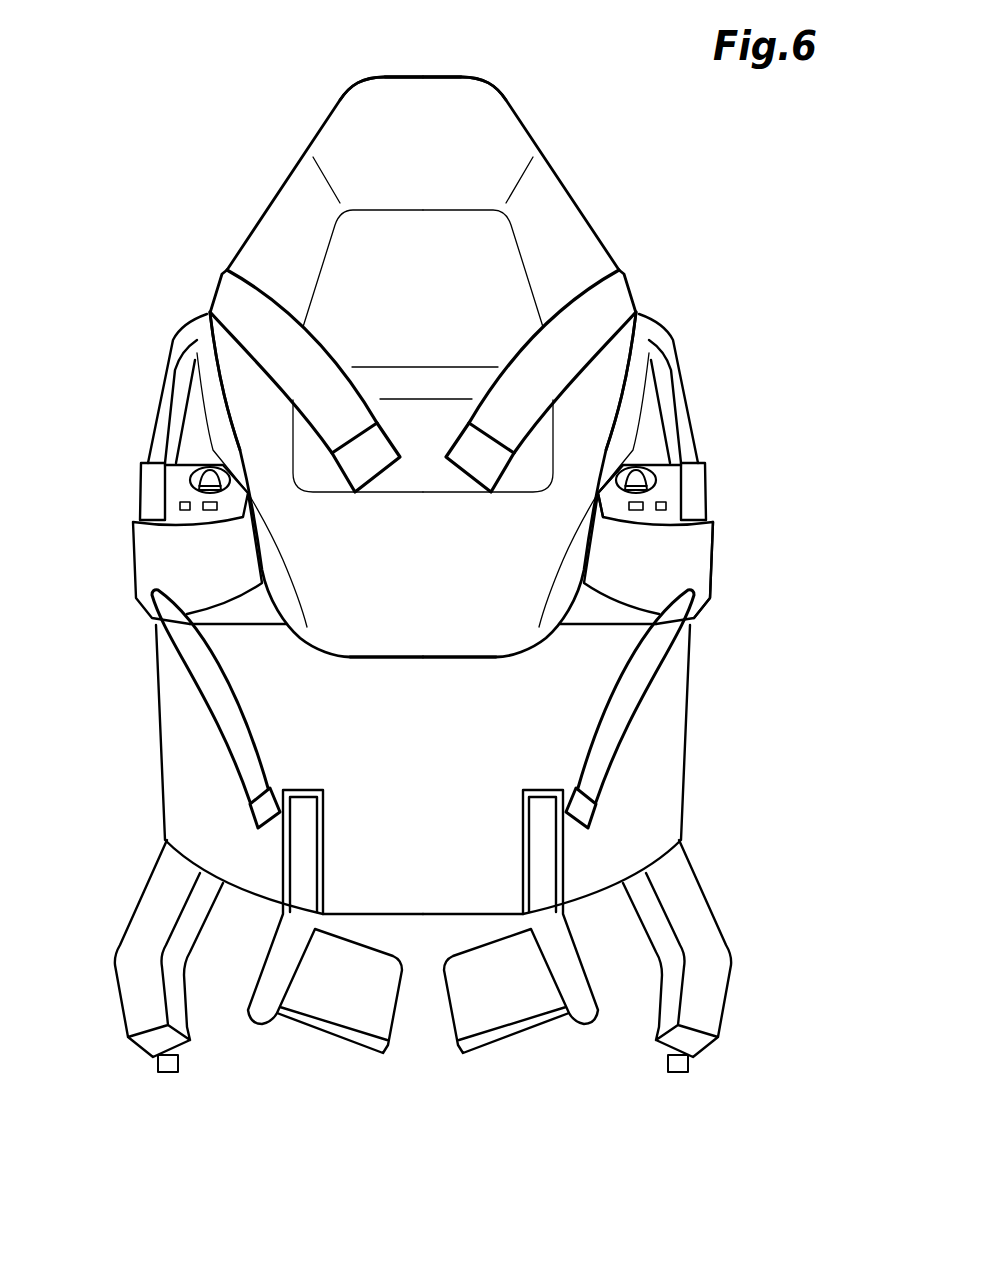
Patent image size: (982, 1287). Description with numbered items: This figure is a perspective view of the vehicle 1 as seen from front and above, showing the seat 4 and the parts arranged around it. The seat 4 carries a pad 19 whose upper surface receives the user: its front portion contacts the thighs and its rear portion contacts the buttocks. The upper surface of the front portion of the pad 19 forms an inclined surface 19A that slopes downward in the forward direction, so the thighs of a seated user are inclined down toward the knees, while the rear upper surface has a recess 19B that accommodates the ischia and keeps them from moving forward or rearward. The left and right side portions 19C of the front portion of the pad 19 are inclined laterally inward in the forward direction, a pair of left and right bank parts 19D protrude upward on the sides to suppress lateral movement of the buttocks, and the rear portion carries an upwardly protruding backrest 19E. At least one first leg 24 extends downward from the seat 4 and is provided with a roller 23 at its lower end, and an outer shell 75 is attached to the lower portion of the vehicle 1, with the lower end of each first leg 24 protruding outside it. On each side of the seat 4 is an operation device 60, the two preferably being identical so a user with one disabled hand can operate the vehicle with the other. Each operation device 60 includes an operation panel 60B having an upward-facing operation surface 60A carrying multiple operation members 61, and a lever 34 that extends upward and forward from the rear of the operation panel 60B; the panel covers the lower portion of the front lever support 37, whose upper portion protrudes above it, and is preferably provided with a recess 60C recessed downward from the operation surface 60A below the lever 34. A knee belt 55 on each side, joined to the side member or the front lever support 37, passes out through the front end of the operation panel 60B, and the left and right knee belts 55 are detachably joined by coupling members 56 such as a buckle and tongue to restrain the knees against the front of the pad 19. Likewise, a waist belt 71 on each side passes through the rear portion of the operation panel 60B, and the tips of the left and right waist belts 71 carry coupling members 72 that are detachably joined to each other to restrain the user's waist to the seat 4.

The vehicle 1 is at (108, 75).
The seat 4 is at (318, 92).
The pad 19 is at (529, 115).
The inclined surface 19A is at (403, 645).
The recess 19B is at (435, 375).
The side portions 19C is at (217, 426).
The bank parts 19D is at (241, 372).
The backrest 19E is at (413, 79).
The roller 23 is at (168, 1062).
The first leg 24 is at (128, 902).
The lever 34 is at (165, 397).
The front lever support 37 is at (152, 485).
The knee belt 55 is at (243, 735).
The coupling members 56 is at (252, 813).
The operation device 60 is at (128, 580).
The operation surface 60A is at (667, 520).
The operation panel 60B is at (700, 550).
The recess 60C is at (657, 447).
The operation members 61 is at (632, 517).
The waist belt 71 is at (220, 293).
The coupling members 72 is at (365, 463).
The outer shell 75 is at (180, 703).